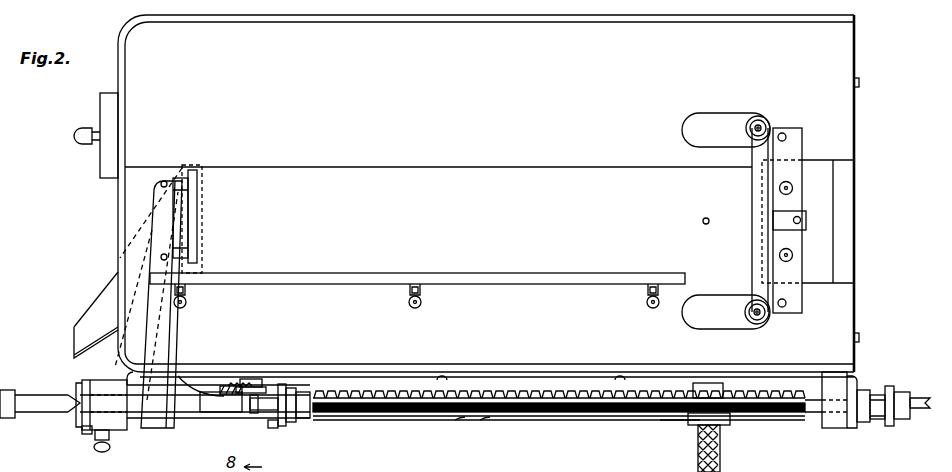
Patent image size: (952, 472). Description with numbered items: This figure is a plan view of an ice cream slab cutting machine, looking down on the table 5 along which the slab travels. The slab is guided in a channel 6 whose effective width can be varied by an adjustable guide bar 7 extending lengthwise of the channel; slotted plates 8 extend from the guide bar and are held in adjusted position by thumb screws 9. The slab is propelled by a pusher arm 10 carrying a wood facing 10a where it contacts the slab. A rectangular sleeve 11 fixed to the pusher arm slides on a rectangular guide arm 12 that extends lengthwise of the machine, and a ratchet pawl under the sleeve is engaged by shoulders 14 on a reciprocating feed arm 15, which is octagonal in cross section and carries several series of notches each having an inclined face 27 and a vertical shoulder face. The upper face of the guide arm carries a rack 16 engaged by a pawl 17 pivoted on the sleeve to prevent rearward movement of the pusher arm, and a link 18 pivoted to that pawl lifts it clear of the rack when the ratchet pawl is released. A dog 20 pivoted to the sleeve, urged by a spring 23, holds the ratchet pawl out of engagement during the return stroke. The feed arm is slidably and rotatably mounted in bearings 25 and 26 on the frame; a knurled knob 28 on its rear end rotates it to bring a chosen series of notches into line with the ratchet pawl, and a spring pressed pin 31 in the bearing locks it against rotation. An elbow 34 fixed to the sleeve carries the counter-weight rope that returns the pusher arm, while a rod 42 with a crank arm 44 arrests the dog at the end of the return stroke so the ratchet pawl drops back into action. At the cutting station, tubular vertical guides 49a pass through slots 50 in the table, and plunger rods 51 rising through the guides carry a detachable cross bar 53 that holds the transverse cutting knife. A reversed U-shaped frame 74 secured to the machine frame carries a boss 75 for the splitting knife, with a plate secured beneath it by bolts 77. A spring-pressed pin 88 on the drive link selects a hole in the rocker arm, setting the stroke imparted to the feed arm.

The table 5 is at (466, 193).
The channel 6 is at (335, 178).
The adjustable guide bar 7 is at (363, 276).
The slotted plates 8 is at (188, 292).
The thumb screws 9 is at (184, 307).
The pusher arm 10 is at (157, 245).
The wood facing 10a is at (197, 222).
The rectangular sleeve 11 is at (195, 395).
The guide arm 12 is at (812, 414).
The shoulders 14 is at (524, 392).
The feed arm 15 is at (668, 420).
The rack 16 is at (362, 416).
The pawl 17 is at (274, 410).
The link 18 is at (272, 418).
The dog 20 is at (262, 392).
The spring 23 is at (244, 382).
The bearing 25 is at (72, 438).
The bearing 26 is at (836, 430).
The inclined face 27 is at (488, 420).
The knurled knob 28 is at (40, 418).
The spring pressed pin 31 is at (110, 450).
The elbow 34 is at (300, 366).
The rod 42 is at (236, 385).
The crank arm 44 is at (228, 393).
The vertically disposed guide 49a is at (750, 130).
The slot 50 is at (715, 116).
The plunger rods 51 is at (770, 122).
The cross bar 53 is at (753, 198).
The reversed U-shaped frame 74 is at (792, 291).
The boss 75 is at (806, 220).
The bolts 77 is at (793, 189).
The spring-pressed pin 88 is at (698, 440).